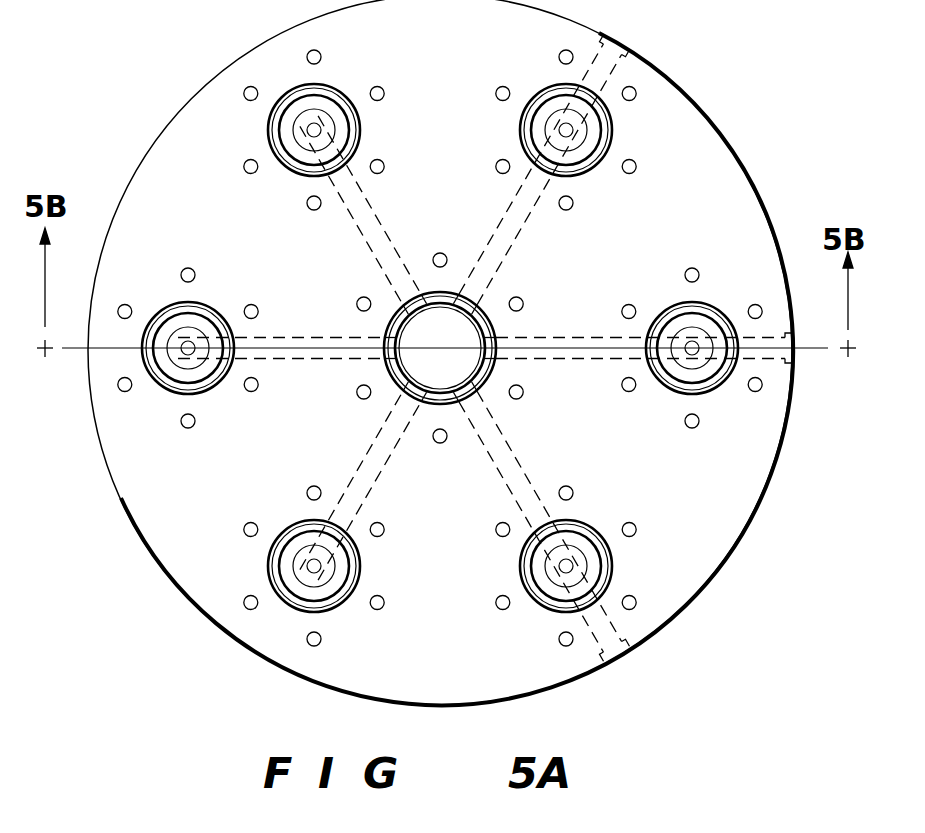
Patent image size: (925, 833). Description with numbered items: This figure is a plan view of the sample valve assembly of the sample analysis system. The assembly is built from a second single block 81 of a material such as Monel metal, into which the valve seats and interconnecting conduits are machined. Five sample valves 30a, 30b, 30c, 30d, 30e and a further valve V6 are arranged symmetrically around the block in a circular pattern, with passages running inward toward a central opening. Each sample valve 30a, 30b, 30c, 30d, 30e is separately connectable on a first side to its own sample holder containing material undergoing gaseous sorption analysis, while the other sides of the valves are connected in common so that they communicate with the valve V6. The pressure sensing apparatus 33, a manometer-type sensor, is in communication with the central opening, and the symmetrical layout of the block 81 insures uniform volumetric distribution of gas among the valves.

The second single block 81 is at (452, 352).
The pressure sensing apparatus 33 is at (415, 332).
The sample valve 30a is at (288, 124).
The sample valve 30b is at (167, 330).
The sample valve 30c is at (303, 538).
The sample valve 30d is at (577, 532).
The sample valve 30e is at (682, 323).
The valve V6 is at (524, 118).